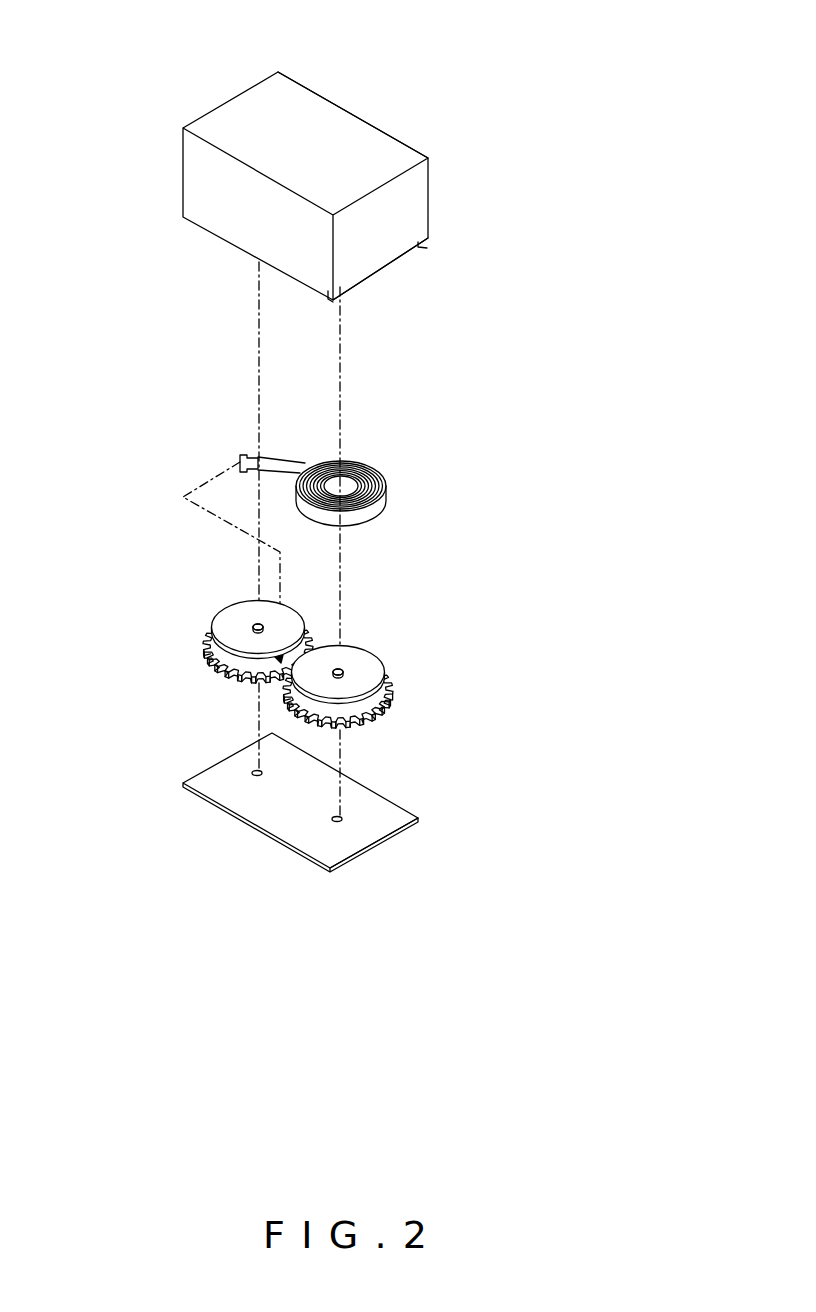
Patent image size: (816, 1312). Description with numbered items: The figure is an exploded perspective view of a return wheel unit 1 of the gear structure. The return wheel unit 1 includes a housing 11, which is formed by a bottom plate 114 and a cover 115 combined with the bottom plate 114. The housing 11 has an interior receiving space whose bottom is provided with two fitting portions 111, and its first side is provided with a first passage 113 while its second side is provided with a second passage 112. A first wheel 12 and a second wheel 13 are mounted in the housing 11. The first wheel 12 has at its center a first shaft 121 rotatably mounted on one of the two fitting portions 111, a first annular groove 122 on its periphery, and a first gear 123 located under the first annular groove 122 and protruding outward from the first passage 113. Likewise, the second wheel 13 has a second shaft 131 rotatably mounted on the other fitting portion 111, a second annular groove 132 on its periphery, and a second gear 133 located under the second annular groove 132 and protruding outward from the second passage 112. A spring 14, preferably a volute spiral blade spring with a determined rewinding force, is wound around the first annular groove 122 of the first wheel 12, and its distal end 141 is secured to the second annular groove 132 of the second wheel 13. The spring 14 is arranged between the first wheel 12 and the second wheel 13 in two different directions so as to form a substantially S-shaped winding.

The return wheel unit 1 is at (542, 348).
The housing 11 is at (340, 858).
The fitting portions 111 is at (328, 817).
The bottom plate 114 is at (355, 842).
The first wheel 12 is at (391, 675).
The first shaft 121 is at (339, 666).
The first annular groove 122 is at (397, 700).
The first gear 123 is at (382, 723).
The second wheel 13 is at (204, 630).
The second shaft 131 is at (258, 622).
The second annular groove 132 is at (203, 657).
The second gear 133 is at (237, 683).
The spring 14 is at (387, 503).
The distal end 141 is at (238, 457).
The second passage 112 is at (183, 193).
The first passage 113 is at (417, 247).
The cover 115 is at (348, 117).